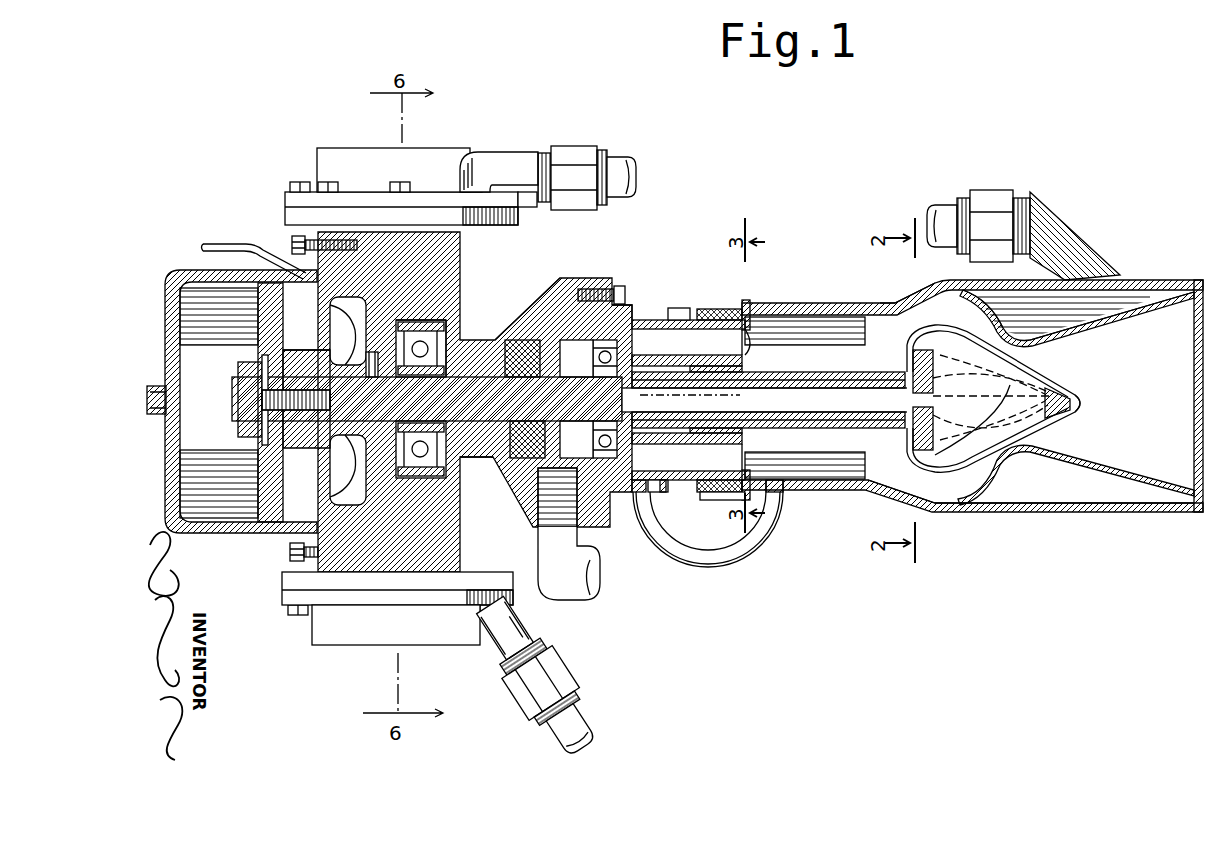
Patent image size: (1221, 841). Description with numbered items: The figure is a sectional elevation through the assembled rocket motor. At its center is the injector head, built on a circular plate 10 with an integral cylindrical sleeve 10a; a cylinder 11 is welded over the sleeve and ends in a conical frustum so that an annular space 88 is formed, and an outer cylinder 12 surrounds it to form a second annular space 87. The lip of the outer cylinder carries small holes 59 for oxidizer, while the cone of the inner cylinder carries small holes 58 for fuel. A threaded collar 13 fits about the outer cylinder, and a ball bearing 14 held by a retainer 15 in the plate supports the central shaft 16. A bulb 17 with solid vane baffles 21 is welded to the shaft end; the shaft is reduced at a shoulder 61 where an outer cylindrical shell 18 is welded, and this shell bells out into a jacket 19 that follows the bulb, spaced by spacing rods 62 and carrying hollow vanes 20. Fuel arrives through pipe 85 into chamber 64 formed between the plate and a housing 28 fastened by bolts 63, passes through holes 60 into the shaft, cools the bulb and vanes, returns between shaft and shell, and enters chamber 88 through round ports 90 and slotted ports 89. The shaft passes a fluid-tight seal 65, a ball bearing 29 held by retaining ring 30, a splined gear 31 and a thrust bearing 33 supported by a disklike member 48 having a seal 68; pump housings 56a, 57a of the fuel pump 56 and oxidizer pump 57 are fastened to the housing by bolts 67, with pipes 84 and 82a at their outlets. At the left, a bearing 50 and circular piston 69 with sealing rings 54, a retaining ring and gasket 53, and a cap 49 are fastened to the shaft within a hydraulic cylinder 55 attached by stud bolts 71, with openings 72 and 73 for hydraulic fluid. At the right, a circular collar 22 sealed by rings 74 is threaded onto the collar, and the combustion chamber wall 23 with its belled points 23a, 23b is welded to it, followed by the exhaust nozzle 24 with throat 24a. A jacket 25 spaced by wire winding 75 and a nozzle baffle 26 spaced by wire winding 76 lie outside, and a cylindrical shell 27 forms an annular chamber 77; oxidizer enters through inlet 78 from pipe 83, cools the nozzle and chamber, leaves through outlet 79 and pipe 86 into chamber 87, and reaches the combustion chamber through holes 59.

The circular plate 10 is at (630, 312).
The cylindrical sleeve 10a is at (663, 367).
The cylinder 11 is at (707, 432).
The outer cylinder 12 is at (677, 307).
The collar 13 is at (695, 308).
The ball bearing 14 is at (590, 385).
The retainer 15 is at (563, 355).
The central shaft 16 is at (535, 420).
The bulb 17 is at (1073, 415).
The outer cylindrical shell 18 is at (850, 423).
The jacket 19 is at (1060, 428).
The hollow vanes 20 is at (913, 332).
The vane baffles 21 is at (950, 328).
The circular collar 22 is at (742, 308).
The combustion chamber wall 23 is at (815, 302).
The point of chamber wall 23a is at (867, 480).
The point of chamber wall 23b is at (953, 500).
The exhaust nozzle 24 is at (1082, 342).
The throat 24a is at (1027, 440).
The jacket 25 is at (862, 302).
The nozzle jacket 26 is at (1013, 322).
The cylindrical shell 27 is at (1165, 283).
The housing 28 is at (522, 312).
The ball bearing 29 is at (438, 340).
The retaining ring 30 is at (430, 322).
The gear 31 is at (442, 300).
The thrust bearing 33 is at (368, 358).
The disklike member 48 is at (350, 318).
The cap 49 is at (233, 427).
The bearing 50 is at (362, 352).
The retaining ring 53 is at (253, 453).
The sealing rings 54 is at (270, 532).
The hydraulic cylinder 55 is at (230, 535).
The fuel pump 56 is at (345, 635).
The housing 56a is at (312, 640).
The oxidizer pump 57 is at (355, 168).
The housing 57a is at (317, 157).
The small holes 58 is at (747, 438).
The small holes 59 is at (752, 460).
The holes 60 is at (581, 423).
The reduced diameter shoulder 61 is at (642, 474).
The spacing rods 62 is at (965, 366).
The bolts 63 is at (624, 292).
The chamber 64 is at (538, 440).
The fluid-tight seal 65 is at (493, 470).
The bolts 67 is at (398, 617).
The fluid-tight seal 68 is at (332, 436).
The circular piston 69 is at (257, 493).
The stud bolts 71 is at (292, 245).
The opening 72 is at (153, 413).
The opening 73 is at (236, 247).
The sealing rings 74 is at (727, 488).
The helical winding of heavy wire 75 is at (898, 297).
The helical winding of wire 76 is at (1077, 333).
The annular chamber 77 is at (1047, 495).
The inlet 78 is at (1093, 277).
The outlet 79 is at (782, 492).
The pipe 82a is at (625, 170).
The pipe 83 is at (945, 212).
The pipe 84 is at (543, 737).
The pipe 85 is at (572, 597).
The pipe 86 is at (713, 580).
The annular space 87 is at (660, 345).
The annular space 88 is at (680, 437).
The slotted ports 89 is at (660, 428).
The round ports 90 is at (715, 402).